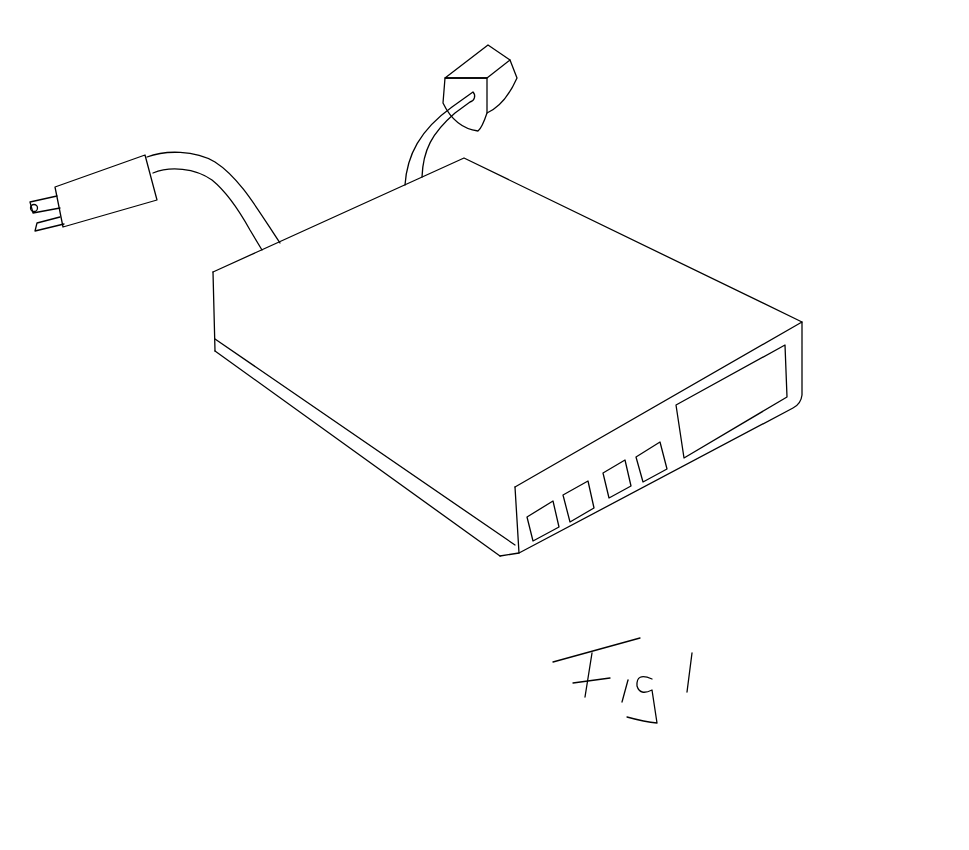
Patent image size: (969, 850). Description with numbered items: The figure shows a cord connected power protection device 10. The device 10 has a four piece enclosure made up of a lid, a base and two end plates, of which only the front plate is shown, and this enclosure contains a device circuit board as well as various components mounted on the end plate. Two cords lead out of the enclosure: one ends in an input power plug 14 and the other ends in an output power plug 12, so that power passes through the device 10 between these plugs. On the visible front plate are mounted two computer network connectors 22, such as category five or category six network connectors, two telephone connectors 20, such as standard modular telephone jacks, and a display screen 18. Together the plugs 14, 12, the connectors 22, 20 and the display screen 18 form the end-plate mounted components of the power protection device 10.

The cord connected power protection device 10 is at (788, 110).
The output power plug 12 is at (508, 74).
The input power plug 14 is at (90, 168).
The display screen 18 is at (777, 393).
The telephone connectors 20 is at (653, 474).
The computer network connectors 22 is at (587, 510).